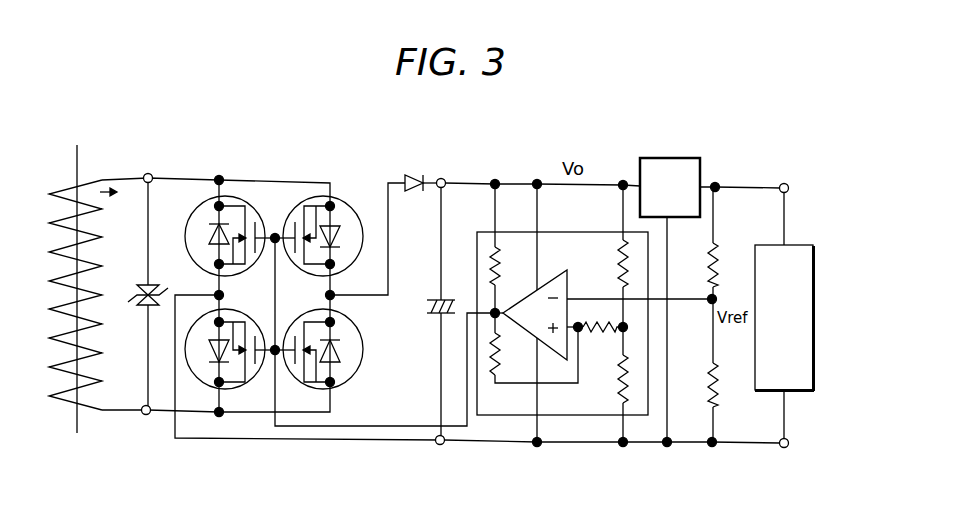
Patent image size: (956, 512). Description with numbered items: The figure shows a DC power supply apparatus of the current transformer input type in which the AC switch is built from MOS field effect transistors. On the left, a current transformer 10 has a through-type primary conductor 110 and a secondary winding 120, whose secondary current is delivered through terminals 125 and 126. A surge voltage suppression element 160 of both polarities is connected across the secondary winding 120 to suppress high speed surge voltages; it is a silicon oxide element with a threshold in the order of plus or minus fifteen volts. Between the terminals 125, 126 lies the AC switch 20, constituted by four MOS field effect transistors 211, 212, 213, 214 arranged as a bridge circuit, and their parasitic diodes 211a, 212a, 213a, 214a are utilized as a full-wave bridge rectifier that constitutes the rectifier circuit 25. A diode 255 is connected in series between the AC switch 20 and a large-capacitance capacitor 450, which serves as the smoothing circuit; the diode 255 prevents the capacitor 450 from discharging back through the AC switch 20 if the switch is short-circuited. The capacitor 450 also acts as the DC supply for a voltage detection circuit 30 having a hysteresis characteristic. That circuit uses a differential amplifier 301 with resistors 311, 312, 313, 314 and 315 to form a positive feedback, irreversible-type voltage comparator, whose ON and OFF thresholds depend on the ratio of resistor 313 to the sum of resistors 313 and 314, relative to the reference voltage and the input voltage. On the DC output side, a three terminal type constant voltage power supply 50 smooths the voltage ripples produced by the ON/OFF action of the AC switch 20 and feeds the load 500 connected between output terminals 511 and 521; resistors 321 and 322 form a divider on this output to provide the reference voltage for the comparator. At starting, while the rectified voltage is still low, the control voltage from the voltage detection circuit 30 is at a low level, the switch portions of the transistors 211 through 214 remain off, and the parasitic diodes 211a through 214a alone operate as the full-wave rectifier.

The current transformer 10 is at (88, 286).
The through-type primary conductor 110 is at (76, 164).
The secondary winding 120 is at (100, 207).
The terminal 125 is at (146, 416).
The terminal 126 is at (150, 173).
The surge voltage suppression element 160 is at (150, 284).
The AC switch 20 is at (334, 300).
The rectifier circuit 25 is at (309, 172).
The MOS field effect transistor 211 is at (224, 376).
The parasitic diode 211a is at (205, 364).
The MOS field effect transistor 212 is at (239, 202).
The parasitic diode 212a is at (213, 201).
The MOS field effect transistor 213 is at (338, 390).
The parasitic diode 213a is at (336, 362).
The MOS field effect transistor 214 is at (328, 202).
The parasitic diode 214a is at (354, 215).
The diode 255 is at (409, 179).
The capacitor 450 is at (429, 300).
The voltage detection circuit 30 is at (594, 232).
The differential amplifier 301 is at (554, 277).
The resistor 311 is at (618, 396).
The resistor 312 is at (619, 257).
The resistor 313 is at (604, 332).
The resistor 314 is at (500, 348).
The resistor 315 is at (500, 260).
The three terminal type constant voltage power supply 50 is at (672, 158).
The resistor 321 is at (709, 380).
The resistor 322 is at (709, 250).
The load 500 is at (804, 245).
The output terminal 511 is at (778, 450).
The output terminal 521 is at (785, 184).